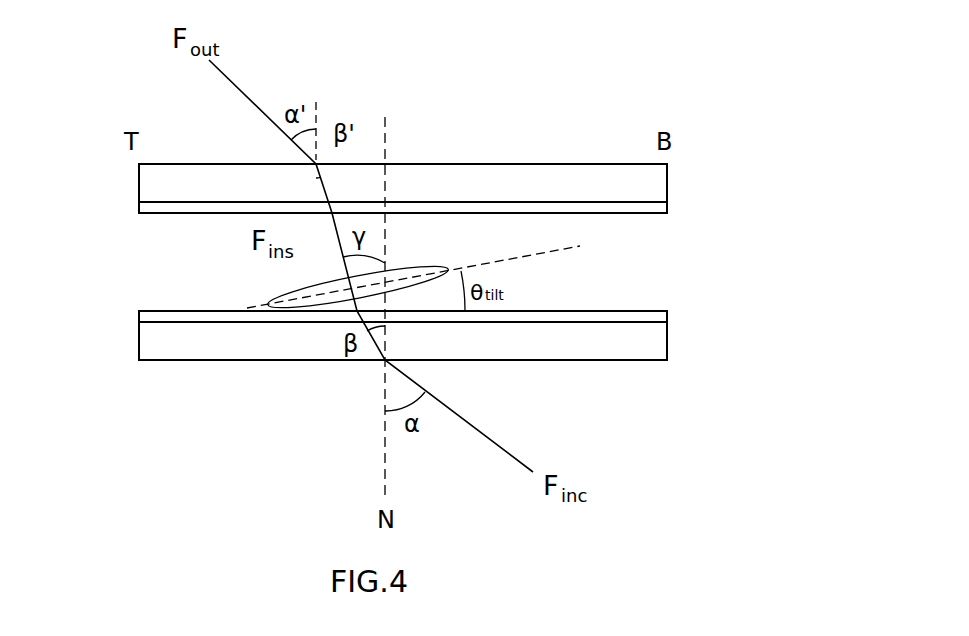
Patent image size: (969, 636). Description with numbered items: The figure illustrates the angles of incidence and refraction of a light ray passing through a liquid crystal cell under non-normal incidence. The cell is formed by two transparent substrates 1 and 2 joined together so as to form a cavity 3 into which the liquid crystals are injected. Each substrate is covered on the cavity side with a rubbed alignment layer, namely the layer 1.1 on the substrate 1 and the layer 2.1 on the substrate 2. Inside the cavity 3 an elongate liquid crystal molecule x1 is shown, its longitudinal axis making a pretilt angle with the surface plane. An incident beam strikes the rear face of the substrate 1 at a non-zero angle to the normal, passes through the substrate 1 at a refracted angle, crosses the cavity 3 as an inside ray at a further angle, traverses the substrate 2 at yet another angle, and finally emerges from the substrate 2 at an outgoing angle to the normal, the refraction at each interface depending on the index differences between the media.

The transparent substrate 1 is at (388, 334).
The alignment layer 1.1 is at (145, 318).
The transparent substrate 2 is at (382, 196).
The alignment layer 2.1 is at (145, 208).
The cavity 3 is at (640, 255).
The liquid crystal molecule x1 is at (307, 311).